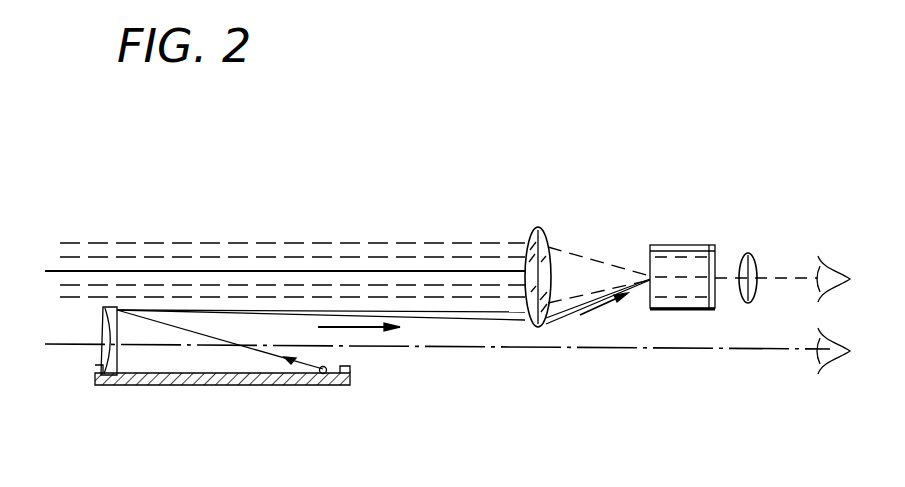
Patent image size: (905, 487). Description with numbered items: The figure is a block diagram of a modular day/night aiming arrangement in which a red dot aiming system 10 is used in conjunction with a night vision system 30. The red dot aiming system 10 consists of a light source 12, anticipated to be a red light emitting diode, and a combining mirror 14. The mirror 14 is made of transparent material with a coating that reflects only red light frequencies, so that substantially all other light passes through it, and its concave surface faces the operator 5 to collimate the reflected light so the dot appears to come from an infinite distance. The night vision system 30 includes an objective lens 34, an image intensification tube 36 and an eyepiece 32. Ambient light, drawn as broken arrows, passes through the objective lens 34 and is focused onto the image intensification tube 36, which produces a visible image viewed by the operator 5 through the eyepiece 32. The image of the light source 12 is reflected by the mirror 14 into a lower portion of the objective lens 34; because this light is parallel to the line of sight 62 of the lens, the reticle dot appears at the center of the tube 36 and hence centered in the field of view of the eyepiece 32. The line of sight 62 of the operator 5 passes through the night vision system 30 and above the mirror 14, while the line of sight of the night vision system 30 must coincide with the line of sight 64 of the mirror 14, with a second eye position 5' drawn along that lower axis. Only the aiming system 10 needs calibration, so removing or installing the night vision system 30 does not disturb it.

The line of sight 62 is at (118, 272).
The line of sight of the mirror 64 is at (66, 344).
The combining mirror 14 is at (103, 358).
The light source 12 is at (333, 366).
The red dot aiming system 10 is at (350, 400).
The objective lens 34 is at (527, 236).
The night vision system 30 is at (752, 218).
The image intensification tube 36 is at (674, 311).
The eyepiece 32 is at (752, 256).
The operator 5 is at (832, 236).
The other eye of observer 5' is at (810, 375).